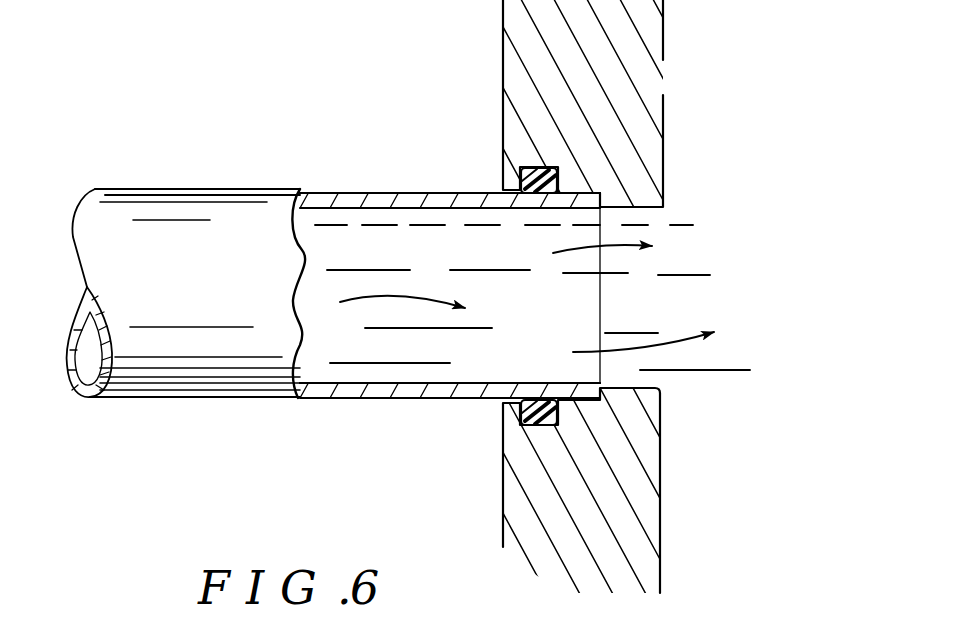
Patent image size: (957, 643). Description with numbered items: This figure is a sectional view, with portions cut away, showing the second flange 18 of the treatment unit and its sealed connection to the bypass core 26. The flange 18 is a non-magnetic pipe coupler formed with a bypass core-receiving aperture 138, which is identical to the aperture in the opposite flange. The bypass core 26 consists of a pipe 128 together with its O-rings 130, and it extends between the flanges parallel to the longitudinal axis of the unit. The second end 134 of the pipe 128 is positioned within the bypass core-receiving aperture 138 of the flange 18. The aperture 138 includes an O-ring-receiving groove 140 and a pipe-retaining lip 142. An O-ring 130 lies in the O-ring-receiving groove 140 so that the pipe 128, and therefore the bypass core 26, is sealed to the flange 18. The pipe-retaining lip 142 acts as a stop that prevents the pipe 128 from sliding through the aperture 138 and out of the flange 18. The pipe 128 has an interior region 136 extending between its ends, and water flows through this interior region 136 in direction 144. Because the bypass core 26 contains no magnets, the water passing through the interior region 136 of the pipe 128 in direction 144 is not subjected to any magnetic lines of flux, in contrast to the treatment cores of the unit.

The flange 18 is at (668, 72).
The bypass core 26 is at (361, 170).
The pipe 128 is at (192, 226).
The O-ring 130 is at (530, 168).
The second end 134 is at (468, 192).
The interior region 136 is at (94, 357).
The bypass core-receiving aperture 138 is at (684, 210).
The O-ring-receiving groove 140 is at (544, 424).
The pipe-retaining lip 142 is at (598, 397).
The direction 144 is at (398, 297).